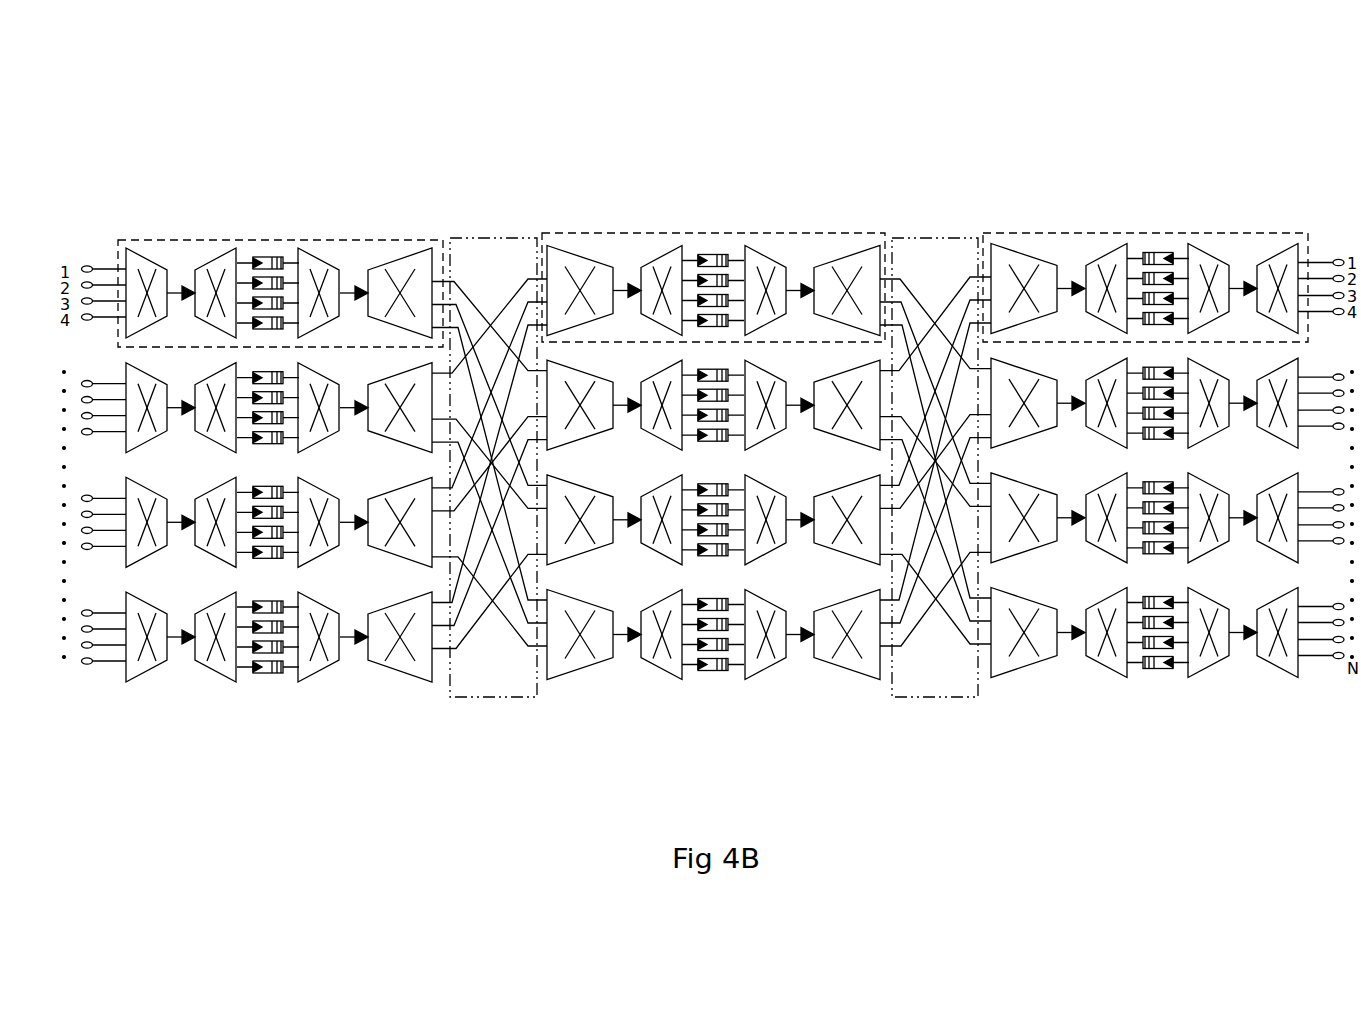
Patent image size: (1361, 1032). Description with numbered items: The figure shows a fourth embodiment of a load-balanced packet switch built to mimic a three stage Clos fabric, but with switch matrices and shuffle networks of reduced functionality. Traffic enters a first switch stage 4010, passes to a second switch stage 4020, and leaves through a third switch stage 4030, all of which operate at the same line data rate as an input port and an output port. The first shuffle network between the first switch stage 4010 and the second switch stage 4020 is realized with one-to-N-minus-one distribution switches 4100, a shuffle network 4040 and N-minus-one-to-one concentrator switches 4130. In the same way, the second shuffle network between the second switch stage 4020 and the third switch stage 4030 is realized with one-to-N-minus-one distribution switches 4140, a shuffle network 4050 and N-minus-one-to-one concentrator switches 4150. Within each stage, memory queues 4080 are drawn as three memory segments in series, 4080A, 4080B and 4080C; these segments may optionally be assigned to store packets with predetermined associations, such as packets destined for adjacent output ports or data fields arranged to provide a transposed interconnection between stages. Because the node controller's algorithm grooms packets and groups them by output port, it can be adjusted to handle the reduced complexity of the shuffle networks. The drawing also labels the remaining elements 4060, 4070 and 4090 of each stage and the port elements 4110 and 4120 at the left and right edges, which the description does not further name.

The first switch stage 4010 is at (163, 235).
The second switch stage 4020 is at (655, 232).
The third switch stage 4030 is at (1150, 230).
The shuffle network 4040 is at (490, 233).
The shuffle network 4050 is at (948, 236).
The input 1x4 switch 4060 is at (142, 685).
The 1x4 splitter 4070 is at (227, 683).
The memory queues 4080 is at (273, 683).
The memory segment 4080A is at (217, 252).
The memory segment 4080B is at (270, 252).
The memory segment 4080C is at (327, 252).
The 4x1 combiner 4090 is at (342, 674).
The 1:(N−1) distribution switches 4100 is at (387, 670).
The input port N 4110 is at (91, 668).
The output port N 4120 is at (1336, 661).
The (N−1):1 concentrator switches 4130 is at (585, 676).
The 1:(N−1) distribution switches 4140 is at (862, 680).
The (N−1):1 concentrator switches 4150 is at (1100, 685).